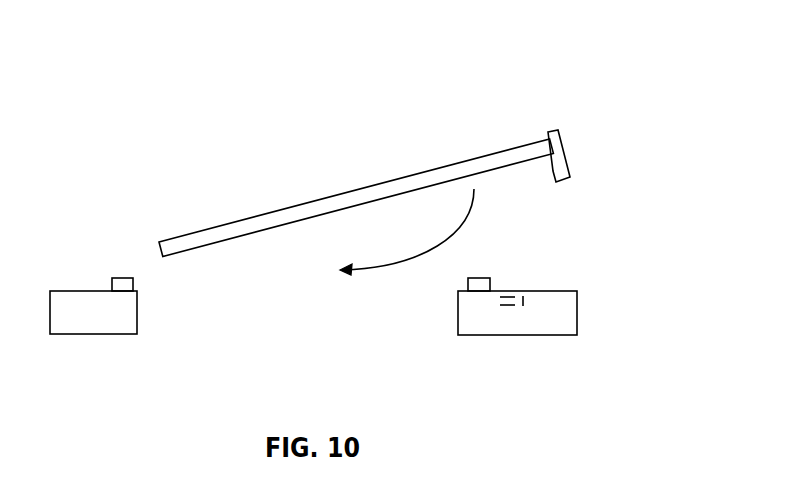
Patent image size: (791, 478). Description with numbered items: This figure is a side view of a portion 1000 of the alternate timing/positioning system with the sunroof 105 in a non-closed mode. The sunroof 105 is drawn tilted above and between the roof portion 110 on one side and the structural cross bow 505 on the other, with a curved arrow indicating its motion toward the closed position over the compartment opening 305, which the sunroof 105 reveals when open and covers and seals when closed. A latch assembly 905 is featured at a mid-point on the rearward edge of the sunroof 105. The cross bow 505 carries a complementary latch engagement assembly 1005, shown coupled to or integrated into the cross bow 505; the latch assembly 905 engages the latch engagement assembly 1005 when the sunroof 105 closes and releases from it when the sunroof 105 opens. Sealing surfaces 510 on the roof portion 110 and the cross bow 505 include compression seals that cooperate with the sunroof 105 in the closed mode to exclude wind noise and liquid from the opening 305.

The portion of alternate timing/positioning system 1000 is at (477, 67).
The sunroof 105 is at (332, 195).
The latch assembly 905 is at (567, 157).
The compartment opening 305 is at (376, 256).
The roof portion 110 is at (93, 312).
The structural cross bow 505 is at (577, 318).
The sealing surface 510 is at (120, 277).
The latch engagement assembly 1005 is at (516, 295).